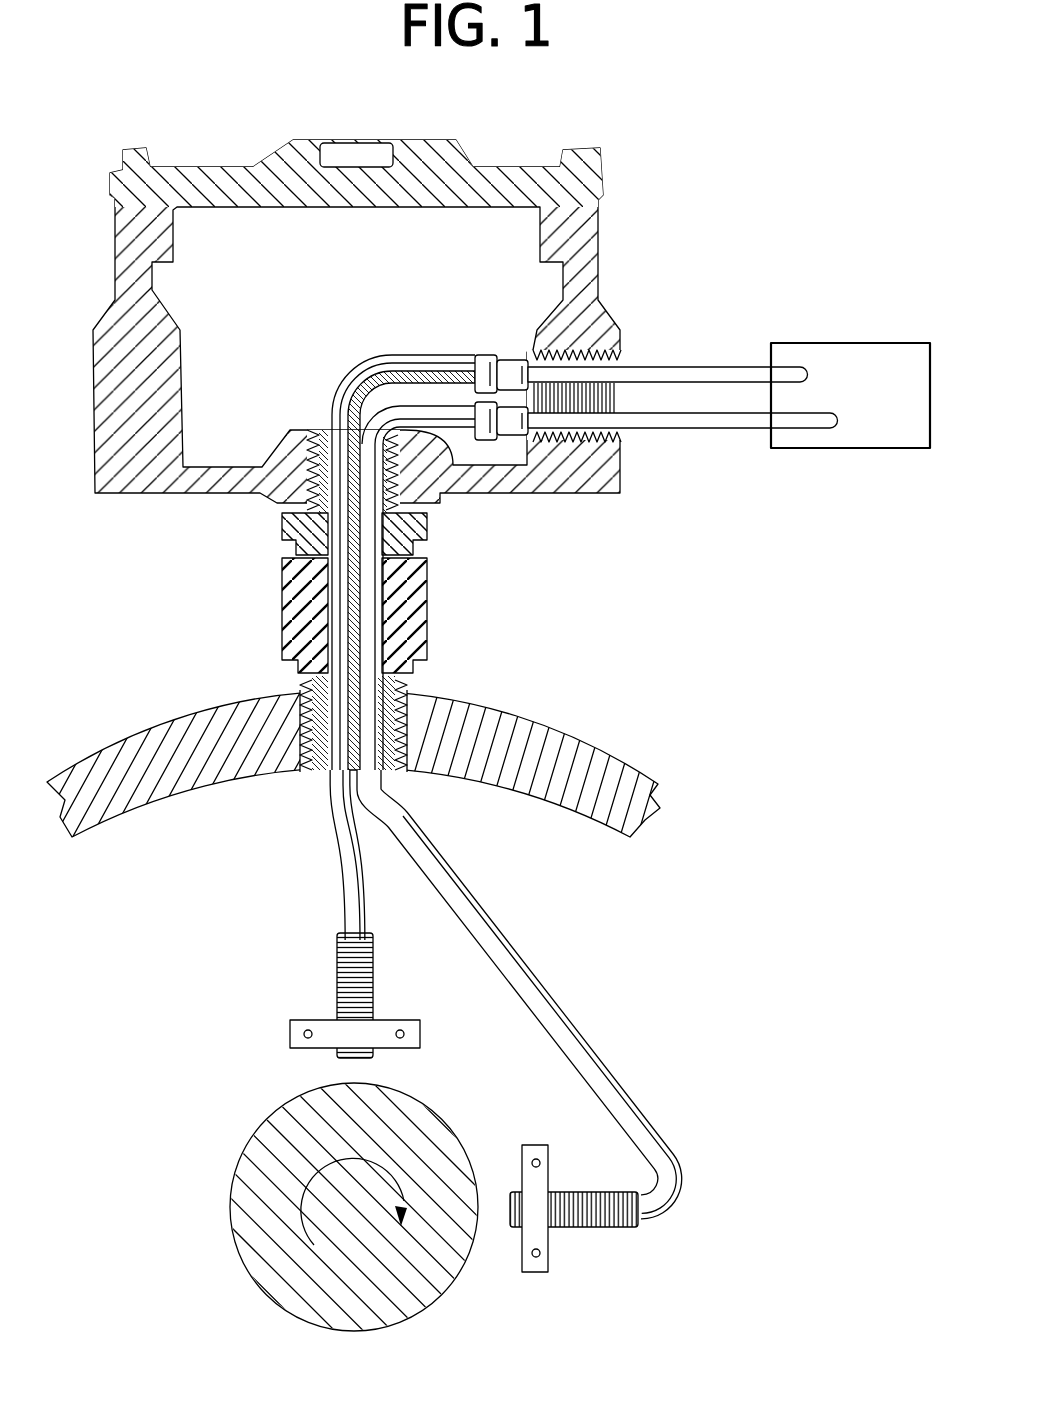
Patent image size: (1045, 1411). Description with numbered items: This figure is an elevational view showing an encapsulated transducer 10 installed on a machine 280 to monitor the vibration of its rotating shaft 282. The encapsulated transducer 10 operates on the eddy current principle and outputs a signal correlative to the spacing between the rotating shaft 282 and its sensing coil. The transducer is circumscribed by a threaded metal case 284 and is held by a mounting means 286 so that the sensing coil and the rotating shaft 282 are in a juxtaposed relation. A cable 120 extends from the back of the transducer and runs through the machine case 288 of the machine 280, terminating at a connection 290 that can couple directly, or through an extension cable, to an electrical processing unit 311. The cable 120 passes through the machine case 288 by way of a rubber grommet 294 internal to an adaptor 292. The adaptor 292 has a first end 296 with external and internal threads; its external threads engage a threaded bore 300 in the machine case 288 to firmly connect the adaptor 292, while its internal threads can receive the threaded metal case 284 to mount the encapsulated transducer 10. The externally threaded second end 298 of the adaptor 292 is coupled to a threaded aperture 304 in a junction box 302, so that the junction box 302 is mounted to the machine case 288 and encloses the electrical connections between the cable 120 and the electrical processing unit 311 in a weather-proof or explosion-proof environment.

The encapsulated transducer 10 is at (302, 960).
The cable 120 is at (338, 840).
The machine 280 is at (563, 694).
The rotating shaft 282 is at (236, 1182).
The threaded metal case 284 is at (335, 990).
The mounting means 286 is at (290, 1028).
The machine case 288 is at (632, 772).
The connection 290 is at (485, 355).
The adaptor 292 is at (468, 530).
The rubber grommet 294 is at (430, 604).
The first end 296 is at (312, 772).
The second end 298 is at (320, 430).
The threaded bore 300 is at (312, 680).
The junction box 302 is at (480, 163).
The threaded aperture 304 is at (288, 520).
The electrical processing unit 311 is at (832, 343).